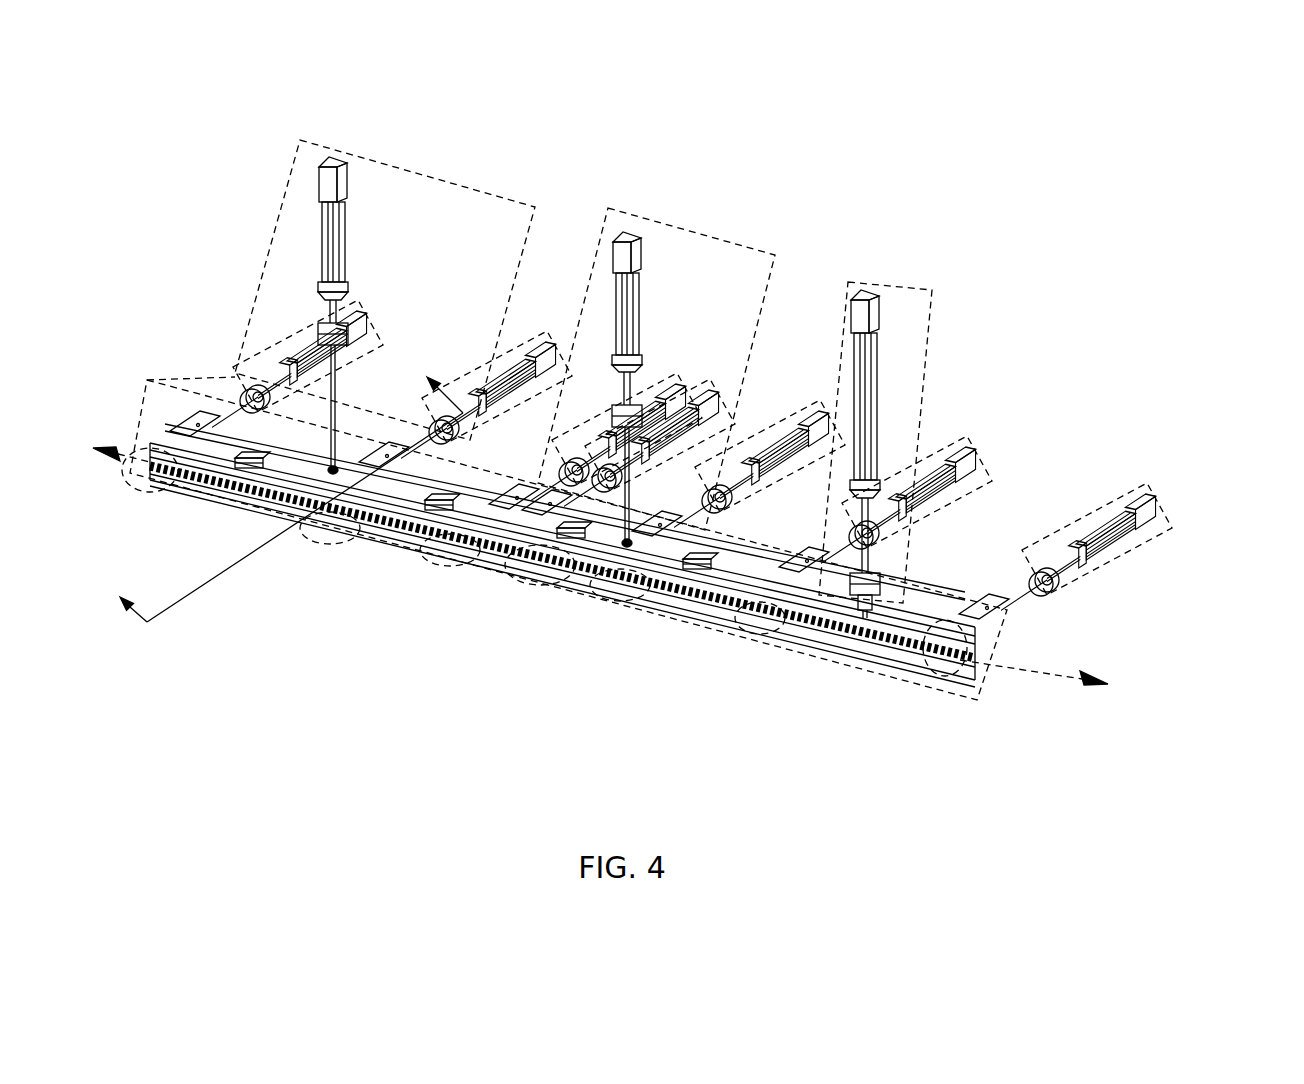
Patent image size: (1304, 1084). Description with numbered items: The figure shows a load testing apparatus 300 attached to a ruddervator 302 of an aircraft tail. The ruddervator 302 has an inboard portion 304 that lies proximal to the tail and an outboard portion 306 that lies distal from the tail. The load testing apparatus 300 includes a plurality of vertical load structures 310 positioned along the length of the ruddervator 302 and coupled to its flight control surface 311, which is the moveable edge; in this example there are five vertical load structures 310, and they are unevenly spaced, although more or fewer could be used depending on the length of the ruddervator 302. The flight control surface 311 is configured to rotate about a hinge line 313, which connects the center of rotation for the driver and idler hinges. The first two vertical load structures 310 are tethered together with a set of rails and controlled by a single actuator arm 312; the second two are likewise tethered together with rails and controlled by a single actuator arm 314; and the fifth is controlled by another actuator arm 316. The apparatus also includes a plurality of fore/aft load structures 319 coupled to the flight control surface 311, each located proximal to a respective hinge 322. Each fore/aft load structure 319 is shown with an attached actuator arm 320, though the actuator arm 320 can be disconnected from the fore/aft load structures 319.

The load testing apparatus 300 is at (663, 617).
The ruddervator 302 is at (285, 512).
The inboard portion 304 is at (230, 492).
The outboard portion 306 is at (828, 648).
The vertical load structures 310 is at (200, 430).
The flight control surface 311 is at (545, 505).
The actuator arm 312 is at (420, 170).
The hinge line 313 is at (1043, 677).
The actuator arm 314 is at (694, 228).
The actuator arm 316 is at (900, 284).
The fore/aft load structures 319 is at (205, 420).
The actuator arm 320 is at (367, 323).
The hinge 322 is at (133, 478).